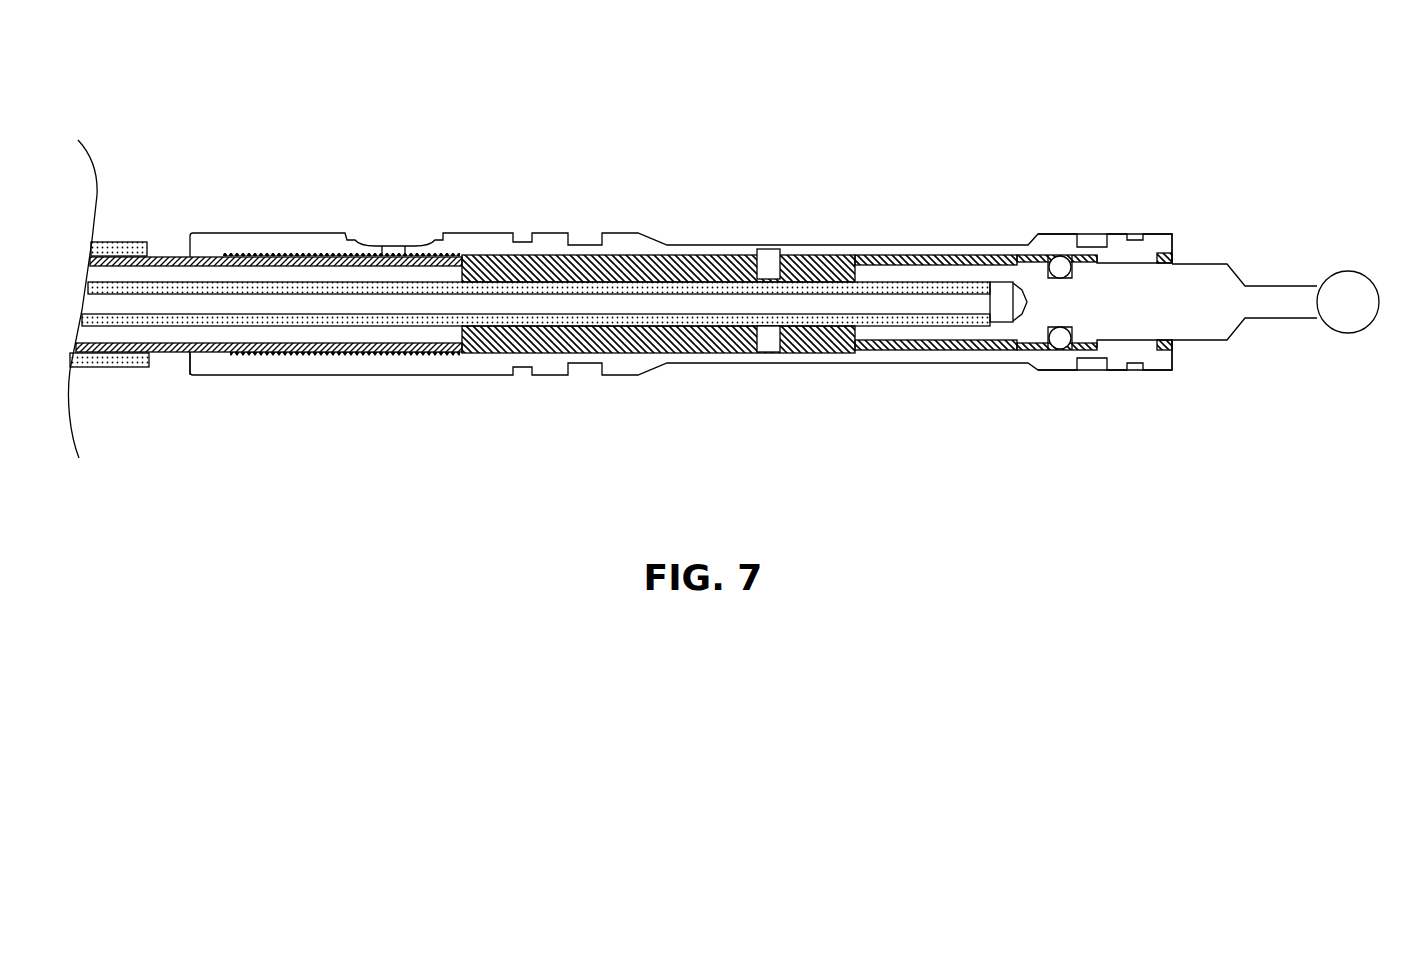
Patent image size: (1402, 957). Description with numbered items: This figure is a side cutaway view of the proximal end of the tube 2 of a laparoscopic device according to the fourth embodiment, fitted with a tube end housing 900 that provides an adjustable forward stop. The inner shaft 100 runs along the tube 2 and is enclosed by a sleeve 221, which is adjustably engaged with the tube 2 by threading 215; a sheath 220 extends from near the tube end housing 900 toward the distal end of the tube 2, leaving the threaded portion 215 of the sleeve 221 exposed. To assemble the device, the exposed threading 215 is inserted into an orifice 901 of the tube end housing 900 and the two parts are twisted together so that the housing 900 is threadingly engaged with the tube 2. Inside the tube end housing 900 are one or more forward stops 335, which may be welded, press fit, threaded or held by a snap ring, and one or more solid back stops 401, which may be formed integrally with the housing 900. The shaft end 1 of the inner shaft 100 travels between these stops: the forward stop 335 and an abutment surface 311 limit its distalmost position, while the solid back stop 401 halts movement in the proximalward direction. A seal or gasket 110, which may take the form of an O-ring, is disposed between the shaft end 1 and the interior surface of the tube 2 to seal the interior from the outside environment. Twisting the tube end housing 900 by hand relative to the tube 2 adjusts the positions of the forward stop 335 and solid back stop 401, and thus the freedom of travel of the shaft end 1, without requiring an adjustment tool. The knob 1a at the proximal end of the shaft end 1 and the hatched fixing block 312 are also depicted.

The tube 2 is at (174, 111).
The tube end housing 900 is at (1008, 244).
The orifice 901 is at (182, 366).
The sleeve 221 is at (166, 252).
The threading 215 is at (300, 353).
The sheath 220 is at (120, 368).
The inner shaft 100 is at (884, 303).
The fixing member 312 is at (817, 353).
The forward stop 335 is at (763, 262).
The abutment surface 311 is at (855, 265).
The seal or gasket 110 is at (1060, 348).
The solid back stop 401 is at (1105, 258).
The shaft end 1 is at (1285, 286).
The knob 1a is at (1380, 305).